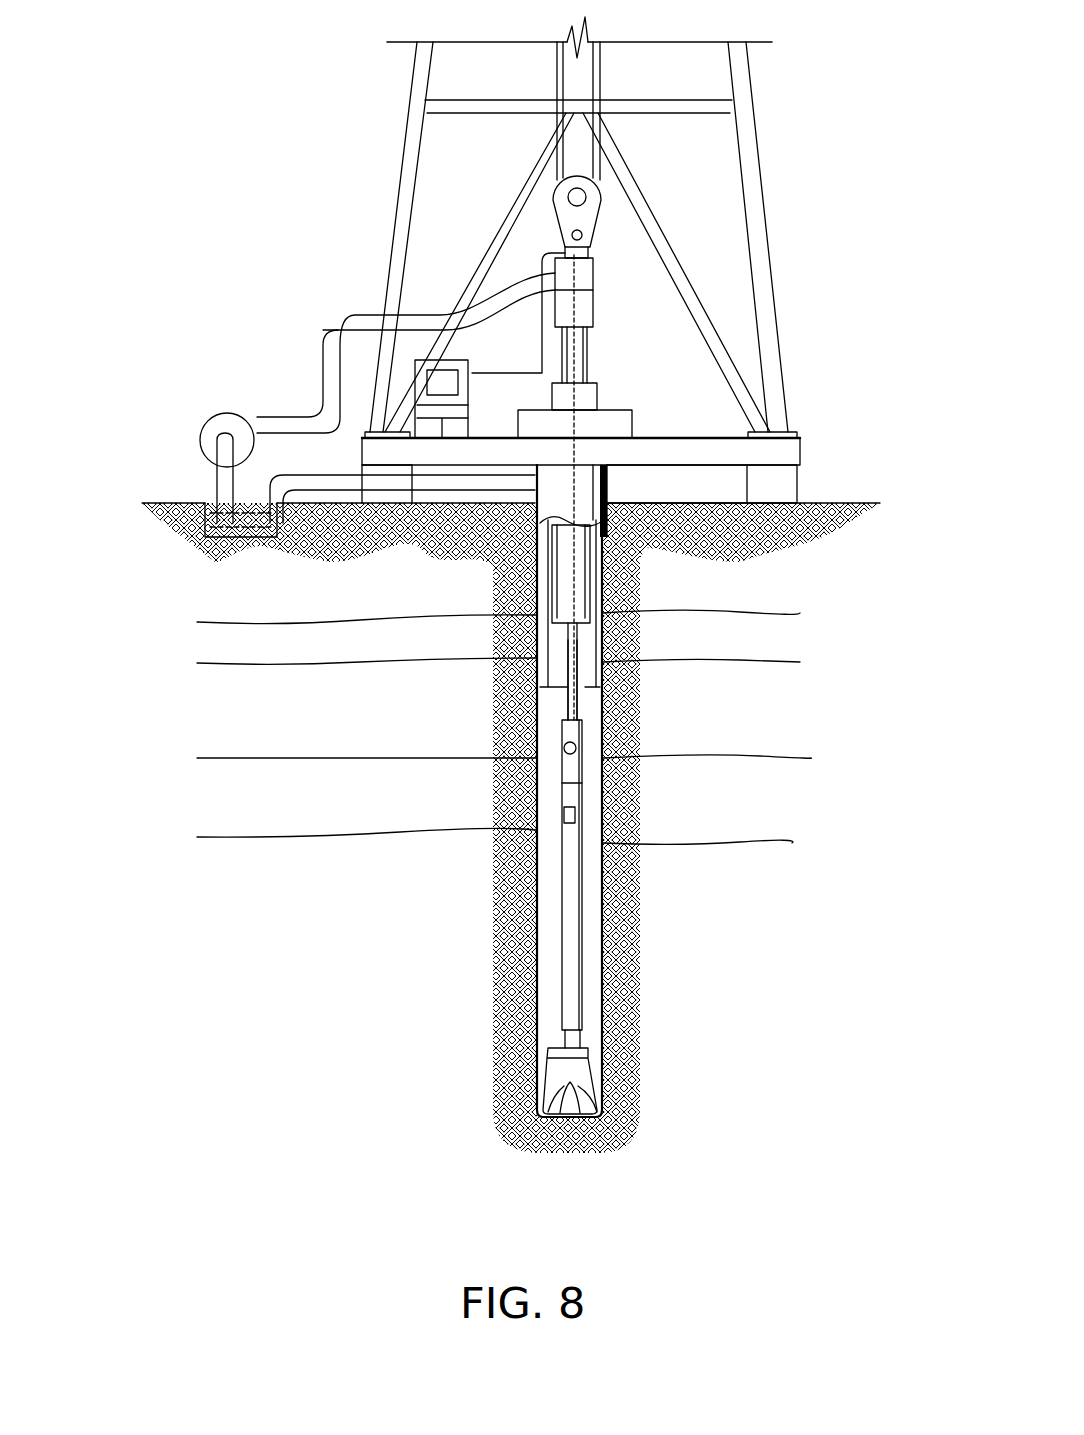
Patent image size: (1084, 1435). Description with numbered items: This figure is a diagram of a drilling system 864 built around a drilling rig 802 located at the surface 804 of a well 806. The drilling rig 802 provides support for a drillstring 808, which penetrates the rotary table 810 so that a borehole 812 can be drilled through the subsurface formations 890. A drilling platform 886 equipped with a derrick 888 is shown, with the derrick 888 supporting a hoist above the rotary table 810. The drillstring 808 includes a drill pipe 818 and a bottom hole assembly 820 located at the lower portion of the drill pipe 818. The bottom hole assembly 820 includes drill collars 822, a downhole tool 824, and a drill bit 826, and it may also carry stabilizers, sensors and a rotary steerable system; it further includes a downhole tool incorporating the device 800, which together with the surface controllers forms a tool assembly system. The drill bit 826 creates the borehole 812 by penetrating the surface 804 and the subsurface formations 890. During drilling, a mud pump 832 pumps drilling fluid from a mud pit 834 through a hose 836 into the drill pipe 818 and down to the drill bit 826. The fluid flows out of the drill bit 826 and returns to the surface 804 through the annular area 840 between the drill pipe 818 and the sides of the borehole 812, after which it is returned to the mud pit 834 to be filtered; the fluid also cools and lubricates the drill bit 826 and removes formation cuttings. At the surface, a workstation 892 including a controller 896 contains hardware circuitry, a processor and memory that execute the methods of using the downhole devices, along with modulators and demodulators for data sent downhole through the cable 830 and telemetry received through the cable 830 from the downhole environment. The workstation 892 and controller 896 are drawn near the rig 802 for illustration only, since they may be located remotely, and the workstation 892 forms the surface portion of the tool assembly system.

The system 864 is at (277, 125).
The derrick 888 is at (750, 122).
The drilling rig 802 is at (772, 227).
The hose 836 is at (340, 318).
The mud pump 832 is at (228, 412).
The workstation 892 is at (459, 356).
The controller 896 is at (468, 391).
The rotary table 810 is at (610, 410).
The drilling platform 886 is at (796, 438).
The surface 804 is at (812, 503).
The well 806 is at (617, 497).
The mud pit 834 is at (225, 537).
The drill collars 822 is at (590, 582).
The cable 830 is at (573, 617).
The drill pipe 818 is at (577, 663).
The subsurface formations 890 is at (170, 620).
The annular area 840 is at (590, 727).
The device 800 is at (578, 752).
The bottom hole assembly 820 is at (493, 1117).
The drillstring 808 is at (590, 903).
The borehole 812 is at (598, 980).
The downhole tool 824 is at (570, 1012).
The drill bit 826 is at (582, 1072).